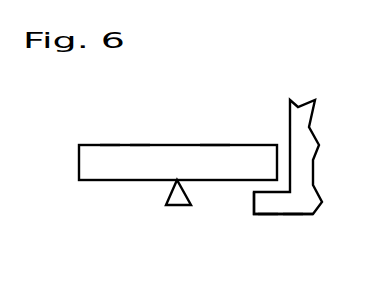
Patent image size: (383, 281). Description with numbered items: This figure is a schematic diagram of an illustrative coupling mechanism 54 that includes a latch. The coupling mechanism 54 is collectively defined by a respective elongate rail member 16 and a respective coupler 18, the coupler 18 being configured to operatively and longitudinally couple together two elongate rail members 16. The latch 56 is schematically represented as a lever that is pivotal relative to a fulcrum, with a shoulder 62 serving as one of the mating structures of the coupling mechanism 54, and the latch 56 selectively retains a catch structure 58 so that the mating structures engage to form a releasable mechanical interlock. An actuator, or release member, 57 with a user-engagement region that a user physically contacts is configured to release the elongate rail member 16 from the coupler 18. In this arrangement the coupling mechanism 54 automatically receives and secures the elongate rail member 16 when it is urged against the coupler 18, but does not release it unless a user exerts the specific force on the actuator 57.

The coupling mechanism 54 is at (249, 95).
The latch 56 is at (216, 145).
The actuator 57 is at (93, 145).
The catch structure 58 is at (255, 196).
The shoulder 62 is at (228, 181).
The elongate rail member 16 is at (108, 121).
The coupler 18 is at (138, 105).